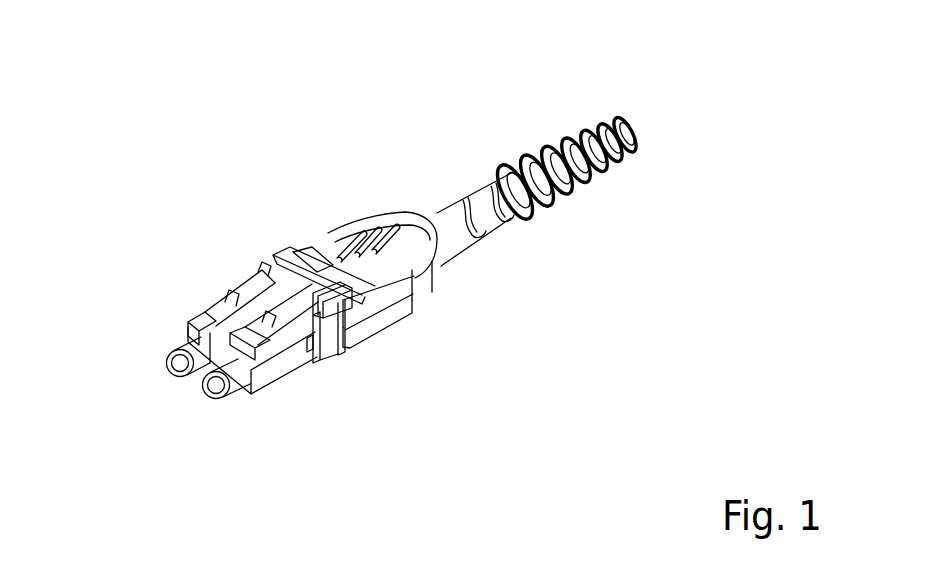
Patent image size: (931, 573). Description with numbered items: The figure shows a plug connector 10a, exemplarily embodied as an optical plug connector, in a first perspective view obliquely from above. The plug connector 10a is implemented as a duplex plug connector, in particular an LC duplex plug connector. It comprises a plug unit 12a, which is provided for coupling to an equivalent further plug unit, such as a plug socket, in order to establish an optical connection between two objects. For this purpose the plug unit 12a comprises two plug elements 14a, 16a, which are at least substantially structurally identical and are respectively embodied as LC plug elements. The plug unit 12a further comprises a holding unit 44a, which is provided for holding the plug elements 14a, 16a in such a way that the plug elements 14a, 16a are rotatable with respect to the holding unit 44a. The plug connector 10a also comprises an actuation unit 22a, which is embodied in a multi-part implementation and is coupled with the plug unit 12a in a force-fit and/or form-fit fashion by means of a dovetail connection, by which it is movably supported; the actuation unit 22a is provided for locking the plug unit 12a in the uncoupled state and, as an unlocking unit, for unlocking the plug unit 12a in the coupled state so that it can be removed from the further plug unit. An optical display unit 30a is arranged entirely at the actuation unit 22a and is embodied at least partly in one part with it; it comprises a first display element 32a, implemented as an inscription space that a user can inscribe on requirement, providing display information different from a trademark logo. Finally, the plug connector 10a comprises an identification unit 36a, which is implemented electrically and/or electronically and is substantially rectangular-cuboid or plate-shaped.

The plug connector 10a is at (347, 249).
The plug unit 12a is at (222, 278).
The plug element 14a is at (273, 397).
The plug element 16a is at (175, 323).
The actuation unit 22a is at (405, 205).
The optical display unit 30a is at (268, 200).
The first display element 32a is at (332, 265).
The identification unit 36a is at (350, 360).
The holding unit 44a is at (372, 324).